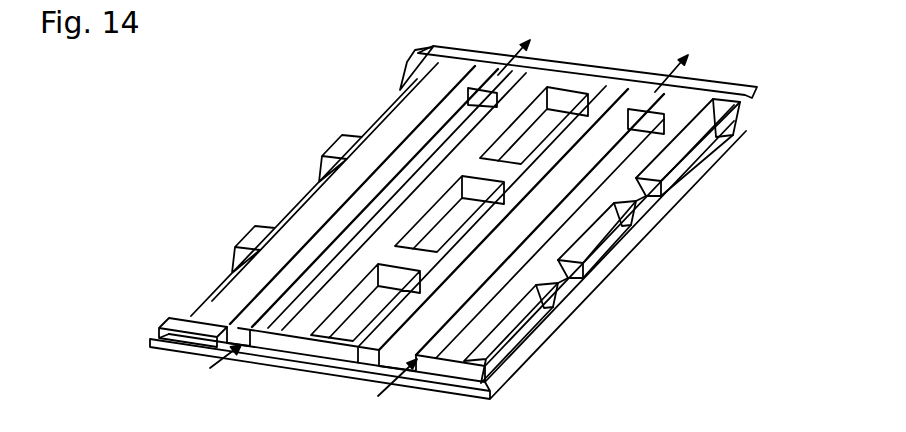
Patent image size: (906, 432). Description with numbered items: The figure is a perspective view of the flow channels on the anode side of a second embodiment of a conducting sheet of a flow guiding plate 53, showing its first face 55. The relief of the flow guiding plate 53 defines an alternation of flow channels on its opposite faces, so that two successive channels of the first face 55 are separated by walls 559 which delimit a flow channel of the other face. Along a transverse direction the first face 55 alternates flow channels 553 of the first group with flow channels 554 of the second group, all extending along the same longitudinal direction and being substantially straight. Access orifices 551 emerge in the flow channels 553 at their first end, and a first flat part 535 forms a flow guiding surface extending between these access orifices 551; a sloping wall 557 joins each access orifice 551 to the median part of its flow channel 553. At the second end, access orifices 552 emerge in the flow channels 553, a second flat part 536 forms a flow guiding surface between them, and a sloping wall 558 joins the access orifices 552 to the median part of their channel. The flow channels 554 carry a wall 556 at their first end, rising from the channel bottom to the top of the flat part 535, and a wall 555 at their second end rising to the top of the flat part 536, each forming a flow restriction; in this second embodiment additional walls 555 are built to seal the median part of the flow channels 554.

The flow guiding plate 53 is at (630, 338).
The first face 55 is at (167, 316).
The first flat part 535 is at (480, 391).
The second flat part 536 is at (757, 88).
The access orifice 551 is at (238, 350).
The access orifice 552 is at (667, 100).
The flow channel of the first group 553 is at (388, 200).
The flow channel of the second group 554 is at (550, 110).
The wall 555 is at (720, 127).
The wall 556 is at (347, 336).
The sloping wall 557 is at (270, 329).
The sloping wall 558 is at (482, 95).
The wall 559 is at (600, 235).